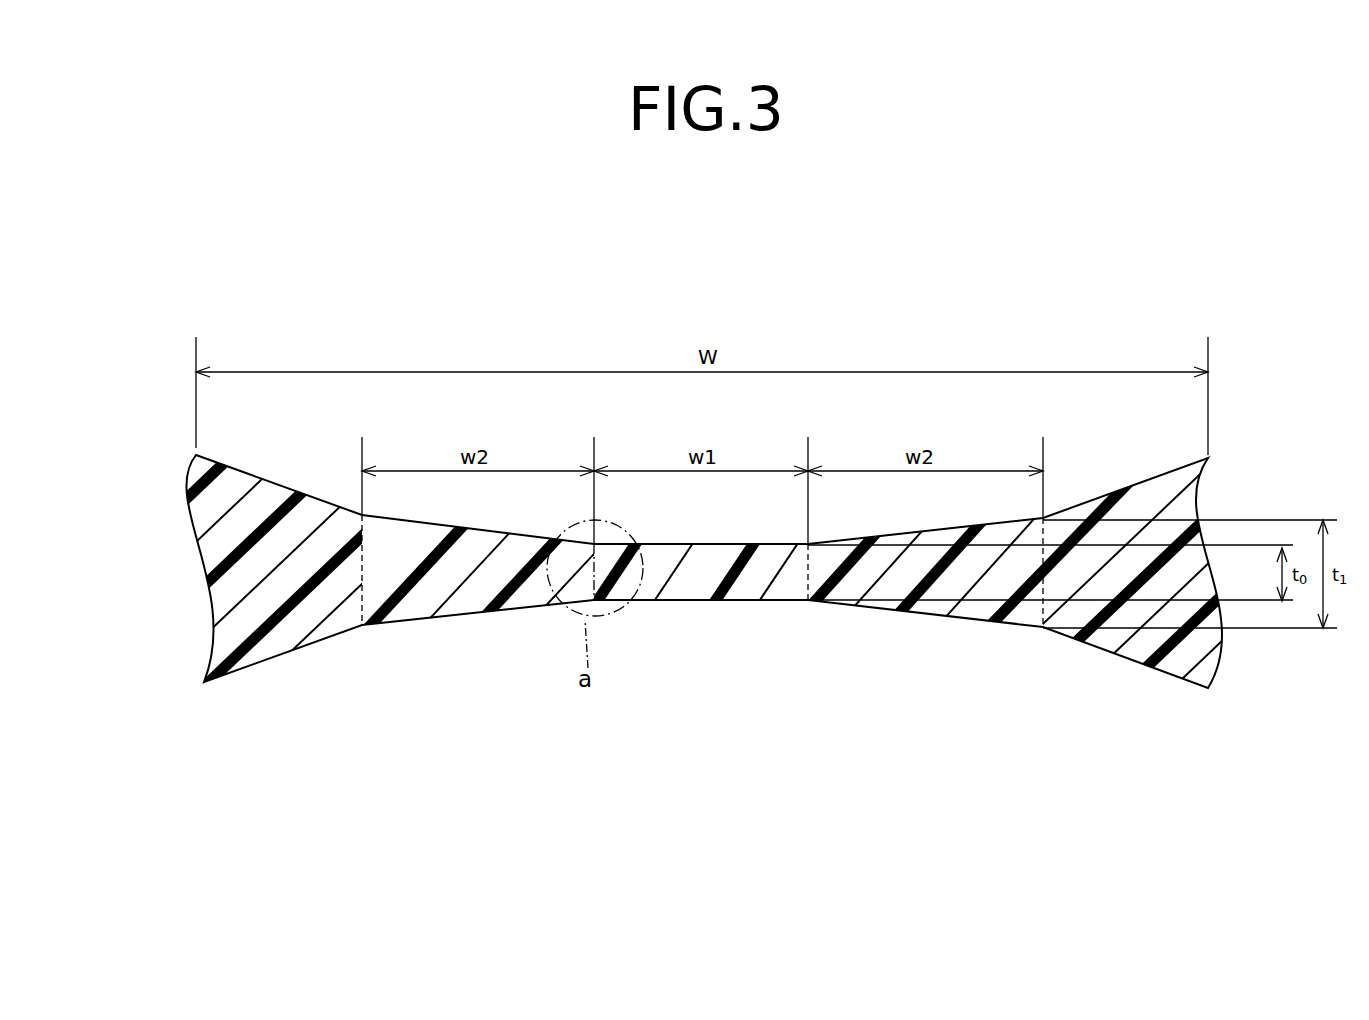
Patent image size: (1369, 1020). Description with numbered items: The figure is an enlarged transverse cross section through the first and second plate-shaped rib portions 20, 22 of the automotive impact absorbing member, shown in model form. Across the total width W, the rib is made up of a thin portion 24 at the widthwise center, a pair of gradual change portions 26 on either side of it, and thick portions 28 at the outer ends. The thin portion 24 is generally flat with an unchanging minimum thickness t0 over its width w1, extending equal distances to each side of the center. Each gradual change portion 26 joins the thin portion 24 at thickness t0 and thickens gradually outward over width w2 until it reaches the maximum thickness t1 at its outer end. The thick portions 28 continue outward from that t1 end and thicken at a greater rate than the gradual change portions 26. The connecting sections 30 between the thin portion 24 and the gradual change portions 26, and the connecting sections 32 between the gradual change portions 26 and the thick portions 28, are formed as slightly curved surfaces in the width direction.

The first plate-shaped rib portion 20 is at (120, 431).
The second plate-shaped rib portion 22 is at (640, 526).
The thin portion 24 is at (710, 575).
The gradual change portion 26 is at (497, 582).
The thick portion 28 is at (292, 618).
The connecting section 30 is at (602, 607).
The connecting section 32 is at (362, 638).